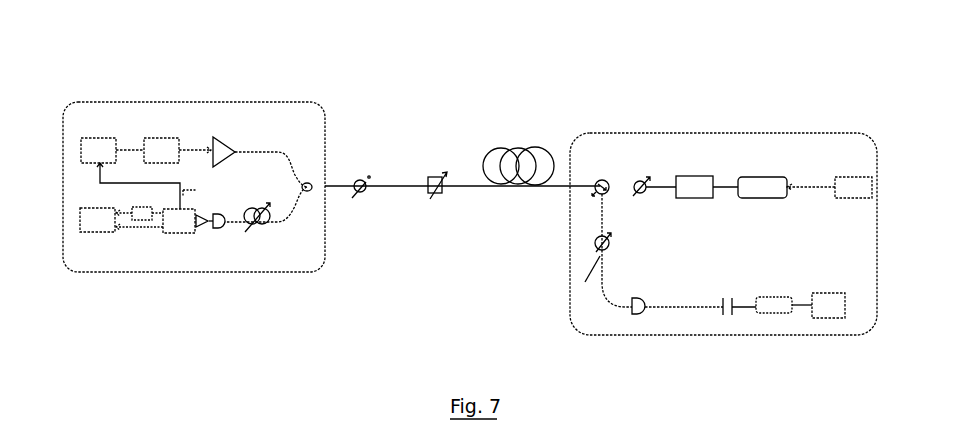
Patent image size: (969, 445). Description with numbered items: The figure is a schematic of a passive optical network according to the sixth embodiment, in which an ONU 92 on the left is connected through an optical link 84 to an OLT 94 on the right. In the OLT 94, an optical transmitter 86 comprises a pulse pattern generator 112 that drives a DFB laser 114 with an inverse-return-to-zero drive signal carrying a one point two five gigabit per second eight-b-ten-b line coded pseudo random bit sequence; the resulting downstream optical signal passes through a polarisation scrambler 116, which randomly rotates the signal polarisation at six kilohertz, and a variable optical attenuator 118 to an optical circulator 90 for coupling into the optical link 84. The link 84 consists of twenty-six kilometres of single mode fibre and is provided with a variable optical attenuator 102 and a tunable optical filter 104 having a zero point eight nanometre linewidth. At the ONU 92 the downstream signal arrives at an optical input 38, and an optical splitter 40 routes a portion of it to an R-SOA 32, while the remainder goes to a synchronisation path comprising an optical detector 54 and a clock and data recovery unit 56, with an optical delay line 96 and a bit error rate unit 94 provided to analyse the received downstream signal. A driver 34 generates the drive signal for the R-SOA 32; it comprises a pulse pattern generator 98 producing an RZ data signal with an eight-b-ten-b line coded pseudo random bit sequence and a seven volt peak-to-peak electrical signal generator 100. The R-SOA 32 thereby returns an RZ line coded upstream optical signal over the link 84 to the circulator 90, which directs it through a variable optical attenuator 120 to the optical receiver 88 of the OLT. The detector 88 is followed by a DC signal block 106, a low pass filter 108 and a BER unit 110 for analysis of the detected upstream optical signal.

The R-SOA 32 is at (232, 140).
The driver 34 is at (141, 117).
The optical input 38 is at (335, 182).
The optical splitter 40 is at (308, 192).
The optical detector 54 is at (220, 230).
The clock and data recovery unit 56 is at (182, 233).
The optical link 84 is at (477, 188).
The optical transmitter 86 is at (811, 156).
The optical receiver 88 is at (642, 317).
The optical circulator 90 is at (607, 180).
The ONU 92 is at (298, 110).
The bit error rate unit 94 is at (89, 208).
The optical delay line 96 is at (265, 226).
The pulse pattern generator 98 is at (80, 148).
The 7 volt peak to peak electrical signal generator 100 is at (167, 138).
The variable optical attenuator 102 is at (362, 193).
The tunable optical filter 104 is at (437, 196).
The DC signal block 106 is at (728, 317).
The low pass filter 108 is at (782, 315).
The BER unit 110 is at (840, 318).
The pulse pattern generator 112 is at (853, 175).
The DFB laser 114 is at (750, 200).
The polarisation scrambler 116 is at (693, 200).
The variable optical attenuator 118 is at (641, 194).
The variable optical attenuator 120 is at (597, 254).